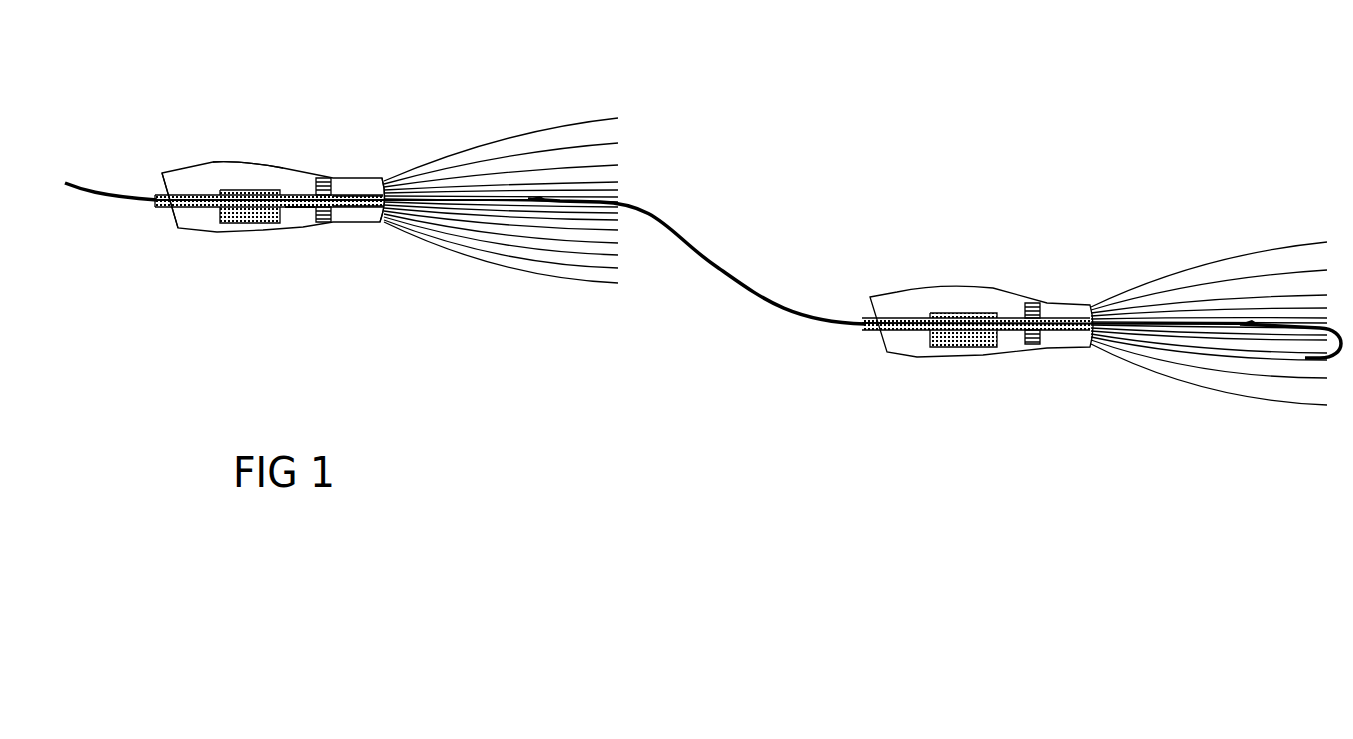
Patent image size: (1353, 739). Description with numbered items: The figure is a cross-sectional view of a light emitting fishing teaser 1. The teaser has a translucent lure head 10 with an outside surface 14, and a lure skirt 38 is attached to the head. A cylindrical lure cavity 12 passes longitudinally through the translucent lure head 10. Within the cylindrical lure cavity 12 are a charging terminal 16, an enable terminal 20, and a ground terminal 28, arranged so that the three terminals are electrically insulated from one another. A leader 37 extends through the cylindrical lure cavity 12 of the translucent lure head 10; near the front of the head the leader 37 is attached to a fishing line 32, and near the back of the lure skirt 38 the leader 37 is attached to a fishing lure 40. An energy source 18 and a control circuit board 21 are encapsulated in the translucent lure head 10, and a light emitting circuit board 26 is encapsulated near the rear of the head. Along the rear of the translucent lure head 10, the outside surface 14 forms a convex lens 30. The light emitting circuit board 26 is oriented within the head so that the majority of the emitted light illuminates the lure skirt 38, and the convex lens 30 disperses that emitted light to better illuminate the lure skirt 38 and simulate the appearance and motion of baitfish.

The light emitting fishing teaser 1 is at (640, 88).
The translucent lure head 10 is at (216, 246).
The cylindrical lure cavity 12 is at (175, 190).
The outside surface 14 is at (232, 162).
The charging terminal 16 is at (202, 195).
The energy source 18 is at (268, 222).
The enable terminal 20 is at (298, 209).
The control circuit board 21 is at (268, 189).
The light emitting circuit board 26 is at (322, 222).
The ground terminal 28 is at (343, 196).
The convex lens 30 is at (385, 188).
The fishing line 32 is at (93, 193).
The leader 37 is at (162, 204).
The lure skirt 38 is at (555, 300).
The fishing lure 40 is at (1212, 176).